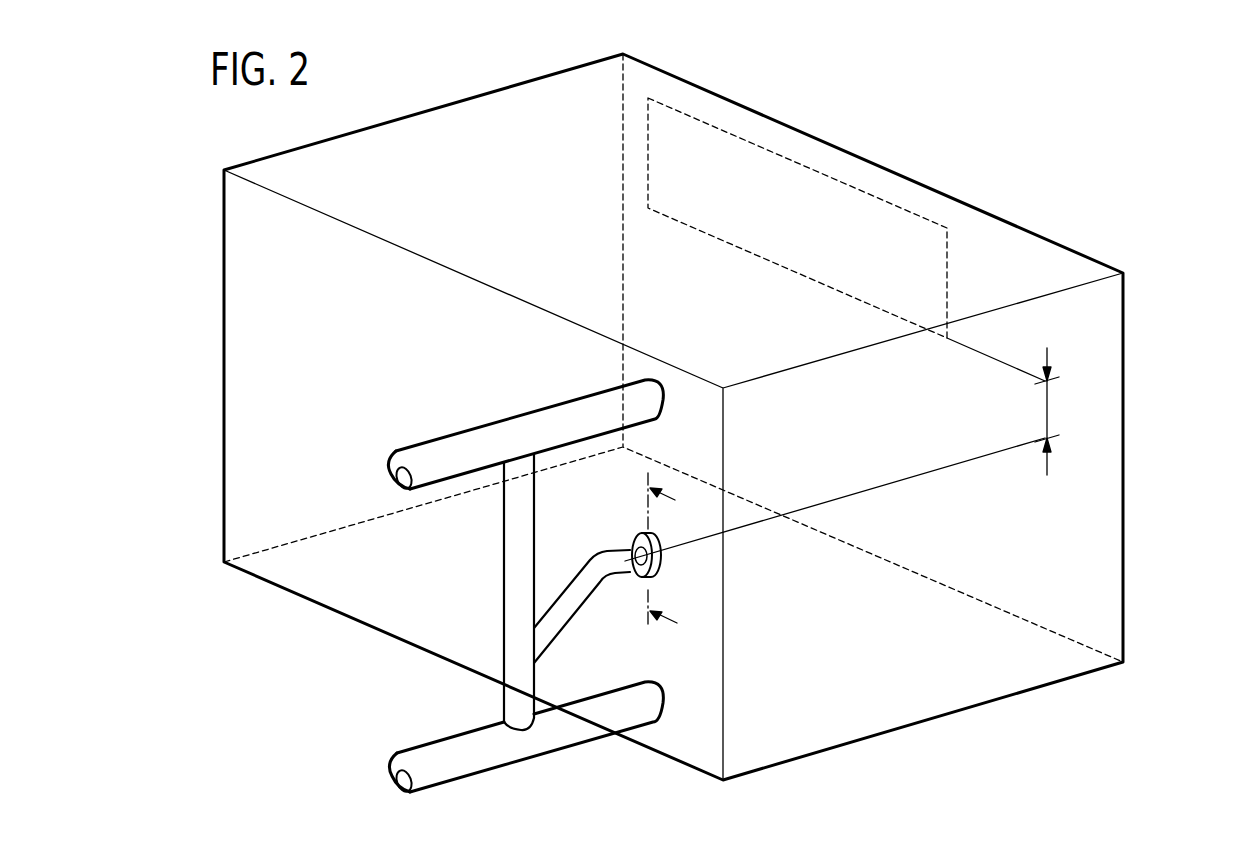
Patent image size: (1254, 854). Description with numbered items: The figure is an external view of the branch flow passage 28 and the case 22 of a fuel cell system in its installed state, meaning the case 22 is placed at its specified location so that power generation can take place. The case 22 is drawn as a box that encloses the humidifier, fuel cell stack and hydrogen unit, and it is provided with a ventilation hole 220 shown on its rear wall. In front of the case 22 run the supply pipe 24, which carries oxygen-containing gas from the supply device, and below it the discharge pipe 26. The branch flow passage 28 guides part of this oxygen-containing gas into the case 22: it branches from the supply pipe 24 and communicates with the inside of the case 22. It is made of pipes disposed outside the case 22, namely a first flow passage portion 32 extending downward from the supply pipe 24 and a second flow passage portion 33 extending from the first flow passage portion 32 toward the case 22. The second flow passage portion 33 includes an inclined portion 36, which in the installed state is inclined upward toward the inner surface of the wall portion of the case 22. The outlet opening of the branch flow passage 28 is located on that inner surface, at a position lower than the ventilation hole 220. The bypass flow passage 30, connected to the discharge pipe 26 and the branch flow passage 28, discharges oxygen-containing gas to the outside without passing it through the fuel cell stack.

The case 22 is at (1087, 233).
The ventilation hole 220 is at (888, 224).
The supply pipe 24 is at (468, 445).
The discharge pipe 26 is at (460, 767).
The branch flow passage 28 is at (491, 578).
The bypass flow passage 30 is at (512, 695).
The first flow passage portion 32 is at (515, 515).
The second flow passage portion 33 is at (610, 544).
The inclined portion 36 is at (565, 608).